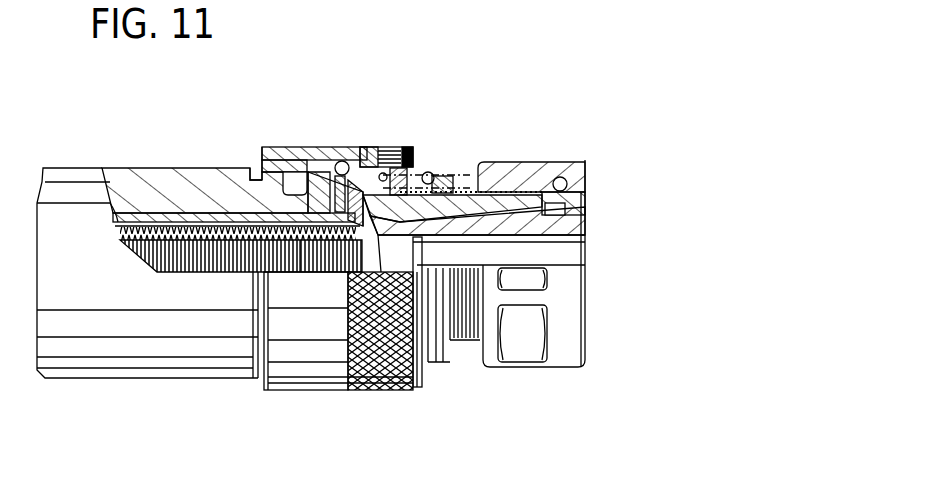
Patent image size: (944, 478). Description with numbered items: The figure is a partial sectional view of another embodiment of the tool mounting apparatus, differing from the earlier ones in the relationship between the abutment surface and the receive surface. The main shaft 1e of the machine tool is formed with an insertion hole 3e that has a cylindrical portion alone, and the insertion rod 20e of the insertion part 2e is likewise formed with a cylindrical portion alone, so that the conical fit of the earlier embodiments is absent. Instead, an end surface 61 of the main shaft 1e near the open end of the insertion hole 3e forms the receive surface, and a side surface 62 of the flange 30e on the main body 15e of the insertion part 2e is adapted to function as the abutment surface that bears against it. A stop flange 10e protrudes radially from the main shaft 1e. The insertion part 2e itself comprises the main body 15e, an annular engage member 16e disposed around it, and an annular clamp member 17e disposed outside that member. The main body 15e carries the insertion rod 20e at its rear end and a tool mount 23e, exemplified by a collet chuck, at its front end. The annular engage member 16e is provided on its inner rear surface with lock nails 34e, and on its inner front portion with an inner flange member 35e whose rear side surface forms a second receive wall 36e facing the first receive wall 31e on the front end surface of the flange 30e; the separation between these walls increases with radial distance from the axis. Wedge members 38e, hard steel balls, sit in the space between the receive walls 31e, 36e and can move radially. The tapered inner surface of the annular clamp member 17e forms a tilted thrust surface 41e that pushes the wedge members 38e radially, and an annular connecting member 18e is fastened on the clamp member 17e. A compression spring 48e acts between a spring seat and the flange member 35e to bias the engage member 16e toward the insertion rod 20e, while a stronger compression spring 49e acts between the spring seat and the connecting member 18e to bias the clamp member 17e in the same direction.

The main shaft 1e is at (77, 177).
The insertion part 2e is at (547, 379).
The insertion hole 3e is at (138, 222).
The insertion rod 20e is at (180, 203).
The lock nail 34e is at (262, 170).
The annular engage member 16e is at (275, 148).
The stop flange 10e is at (291, 165).
The end surface 61 is at (334, 160).
The tilted thrust surface 41e is at (349, 175).
The wedge member 38e is at (368, 147).
The annular clamp member 17e is at (406, 222).
The annular connecting member 18e is at (407, 168).
The compression spring 48e is at (422, 176).
The compression spring 49e is at (440, 172).
The tool mount 23e is at (581, 162).
The side surface 62 is at (262, 242).
The flange 30e is at (310, 190).
The first receive wall 31e is at (337, 215).
The second receive wall 36e is at (366, 380).
The inner flange member 35e is at (413, 365).
The main body 15e is at (428, 295).